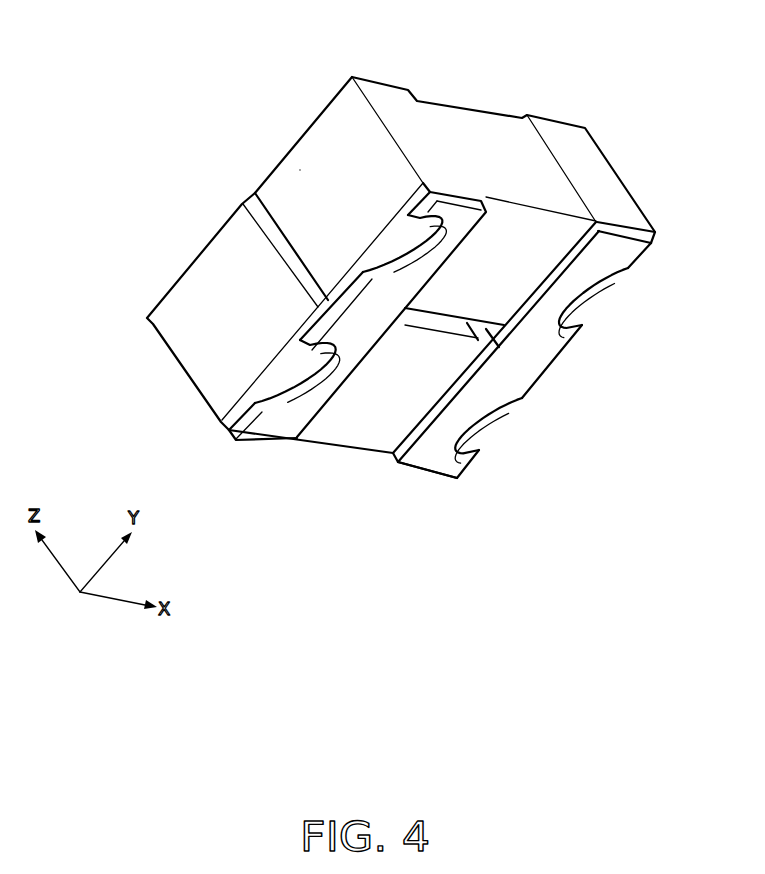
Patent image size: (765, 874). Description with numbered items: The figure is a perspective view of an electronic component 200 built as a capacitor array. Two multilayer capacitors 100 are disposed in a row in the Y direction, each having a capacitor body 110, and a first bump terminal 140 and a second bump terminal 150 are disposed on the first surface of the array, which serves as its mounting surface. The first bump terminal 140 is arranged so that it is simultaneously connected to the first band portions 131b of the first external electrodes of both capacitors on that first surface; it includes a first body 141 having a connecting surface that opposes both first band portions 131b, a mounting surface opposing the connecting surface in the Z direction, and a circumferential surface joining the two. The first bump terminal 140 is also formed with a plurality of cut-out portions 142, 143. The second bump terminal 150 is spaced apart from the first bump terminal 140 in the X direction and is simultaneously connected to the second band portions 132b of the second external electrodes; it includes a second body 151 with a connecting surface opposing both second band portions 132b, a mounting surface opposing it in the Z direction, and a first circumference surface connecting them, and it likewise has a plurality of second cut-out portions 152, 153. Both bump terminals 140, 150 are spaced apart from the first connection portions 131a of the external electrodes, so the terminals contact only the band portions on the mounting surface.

The electronic component 200 is at (152, 53).
The multilayer capacitor 100 is at (506, 108).
The capacitor body 110 is at (470, 119).
The first connection portion 131a is at (307, 150).
The first band portion 131b is at (382, 240).
The second band portion 132b is at (608, 284).
The first bump terminal 140 is at (256, 451).
The first body 141 is at (284, 434).
The cut-out portion 142 is at (249, 397).
The cut-out portion 143 is at (393, 247).
The second bump terminal 150 is at (426, 487).
The second body 151 is at (450, 467).
The second cut-out portion 152 is at (472, 423).
The second cut-out portion 153 is at (590, 289).